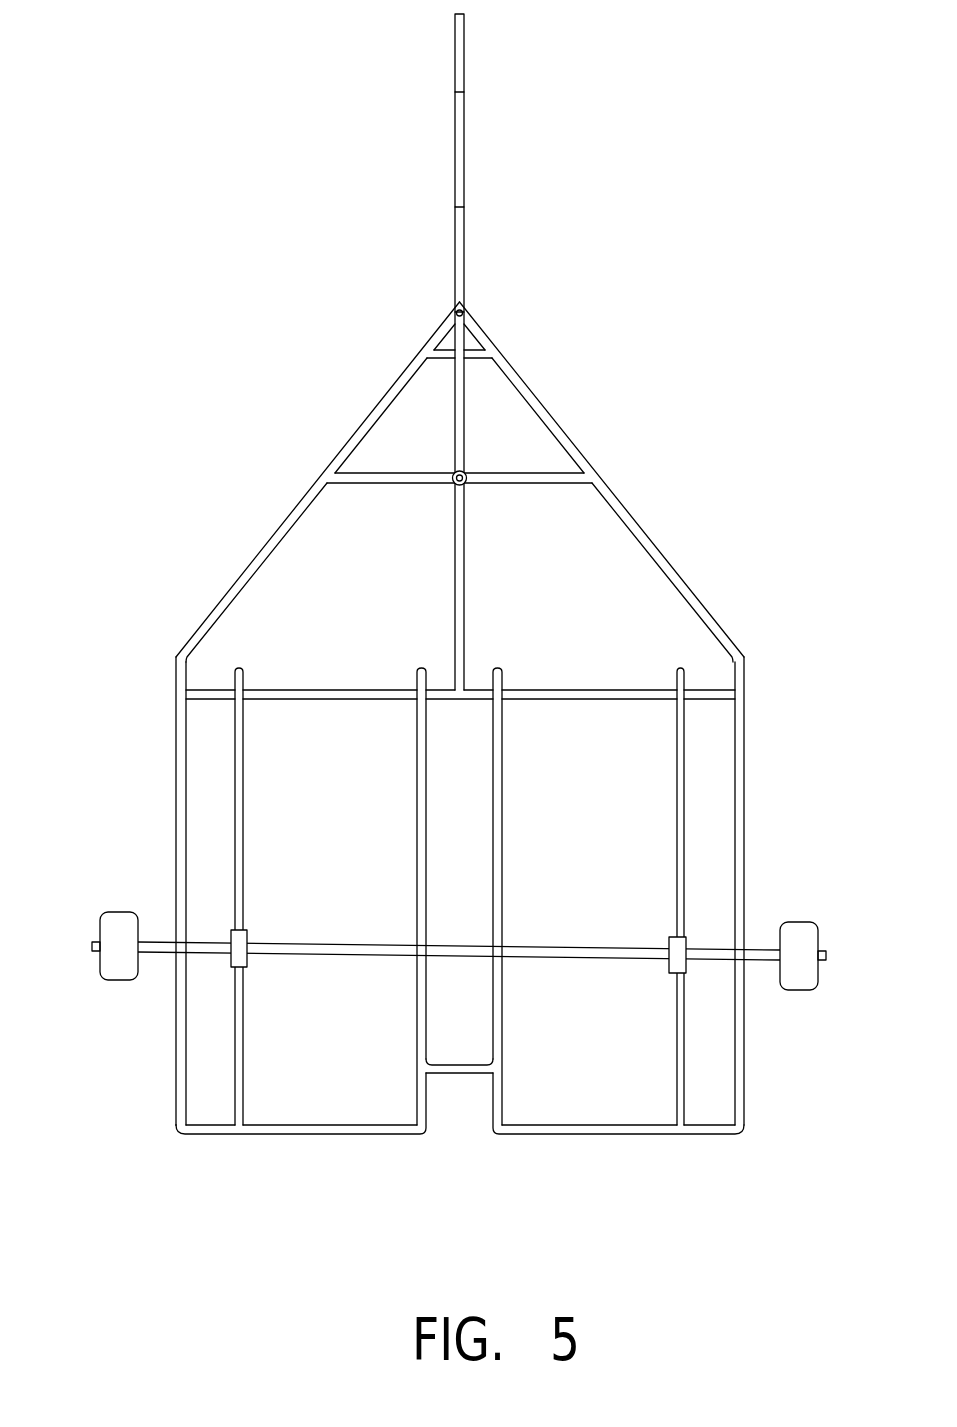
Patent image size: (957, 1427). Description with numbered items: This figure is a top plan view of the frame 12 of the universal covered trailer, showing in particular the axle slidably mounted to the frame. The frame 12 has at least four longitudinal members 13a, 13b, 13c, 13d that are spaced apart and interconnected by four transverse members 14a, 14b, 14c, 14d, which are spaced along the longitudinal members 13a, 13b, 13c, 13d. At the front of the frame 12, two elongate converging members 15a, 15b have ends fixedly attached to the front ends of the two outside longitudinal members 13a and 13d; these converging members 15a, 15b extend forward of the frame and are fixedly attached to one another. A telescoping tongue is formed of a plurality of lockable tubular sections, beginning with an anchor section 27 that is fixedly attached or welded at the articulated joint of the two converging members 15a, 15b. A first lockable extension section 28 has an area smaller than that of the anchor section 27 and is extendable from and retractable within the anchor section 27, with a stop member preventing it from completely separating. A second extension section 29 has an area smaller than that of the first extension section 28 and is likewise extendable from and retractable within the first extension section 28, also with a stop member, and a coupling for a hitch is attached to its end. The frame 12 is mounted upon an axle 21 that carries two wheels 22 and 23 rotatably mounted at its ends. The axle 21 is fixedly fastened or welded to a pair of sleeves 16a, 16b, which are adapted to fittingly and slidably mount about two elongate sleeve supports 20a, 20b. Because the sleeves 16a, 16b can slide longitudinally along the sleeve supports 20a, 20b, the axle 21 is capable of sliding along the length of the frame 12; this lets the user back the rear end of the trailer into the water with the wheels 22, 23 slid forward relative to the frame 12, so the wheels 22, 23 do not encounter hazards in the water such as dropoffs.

The frame 12 is at (162, 1142).
The longitudinal member 13a is at (744, 783).
The longitudinal member 13b is at (500, 848).
The longitudinal member 13c is at (421, 840).
The longitudinal member 13d is at (177, 797).
The transverse member 14a is at (565, 1134).
The transverse member 14b is at (360, 1135).
The transverse member 14c is at (330, 689).
The transverse member 14d is at (430, 483).
The converging member 15a is at (552, 428).
The converging member 15b is at (345, 456).
The sleeve 16a is at (678, 943).
The sleeve 16b is at (241, 942).
The sleeve support 20a is at (678, 793).
The sleeve support 20b is at (241, 778).
The axle 21 is at (340, 945).
The wheel 22 is at (803, 937).
The wheel 23 is at (107, 918).
The anchor section 27 is at (461, 268).
The first extension section 28 is at (461, 173).
The second extension section 29 is at (461, 53).